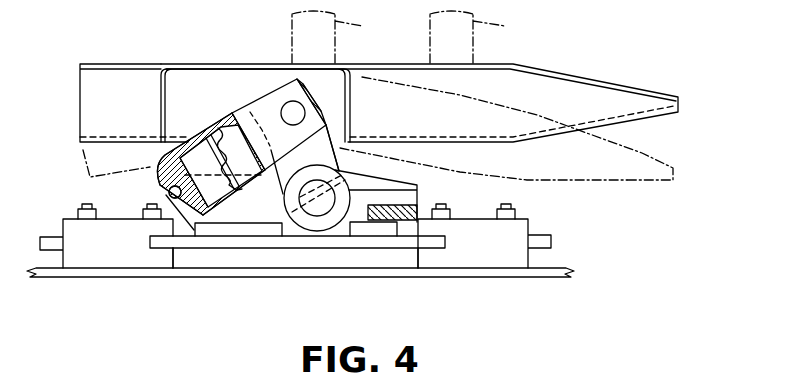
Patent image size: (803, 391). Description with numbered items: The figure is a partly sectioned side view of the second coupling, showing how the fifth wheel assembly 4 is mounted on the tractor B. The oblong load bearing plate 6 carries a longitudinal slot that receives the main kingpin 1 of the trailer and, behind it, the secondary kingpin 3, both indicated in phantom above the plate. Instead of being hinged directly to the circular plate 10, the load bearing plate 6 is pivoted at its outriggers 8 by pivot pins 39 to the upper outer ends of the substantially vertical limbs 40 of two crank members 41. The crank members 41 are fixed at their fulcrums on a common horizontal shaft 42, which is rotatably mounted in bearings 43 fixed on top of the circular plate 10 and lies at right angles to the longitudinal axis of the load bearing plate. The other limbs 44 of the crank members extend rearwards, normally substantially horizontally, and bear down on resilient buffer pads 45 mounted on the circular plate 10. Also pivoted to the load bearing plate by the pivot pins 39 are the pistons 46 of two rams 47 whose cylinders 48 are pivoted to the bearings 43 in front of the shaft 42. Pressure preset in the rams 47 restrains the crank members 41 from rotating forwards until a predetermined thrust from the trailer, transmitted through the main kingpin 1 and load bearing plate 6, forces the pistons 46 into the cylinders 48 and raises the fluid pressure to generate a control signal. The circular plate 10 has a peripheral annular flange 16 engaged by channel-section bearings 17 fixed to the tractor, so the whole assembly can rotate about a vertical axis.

The main kingpin 1 is at (336, 37).
The secondary kingpin 3 is at (478, 37).
The fifth wheel assembly 4 is at (163, 62).
The load bearing plate 6 is at (593, 90).
The outriggers 8 is at (162, 107).
The circular plate 10 is at (202, 257).
The annular flange 16 is at (288, 241).
The bearings 17 is at (75, 237).
The pivot pins 39 is at (292, 107).
The limbs 40 is at (318, 142).
The crank members 41 is at (341, 158).
The shaft 42 is at (321, 207).
The bearings 43 is at (247, 204).
The limbs 44 is at (414, 193).
The buffer pads 45 is at (395, 219).
The pistons 46 is at (252, 116).
The rams 47 is at (208, 124).
The cylinders 48 is at (163, 181).
The tractor B is at (543, 272).